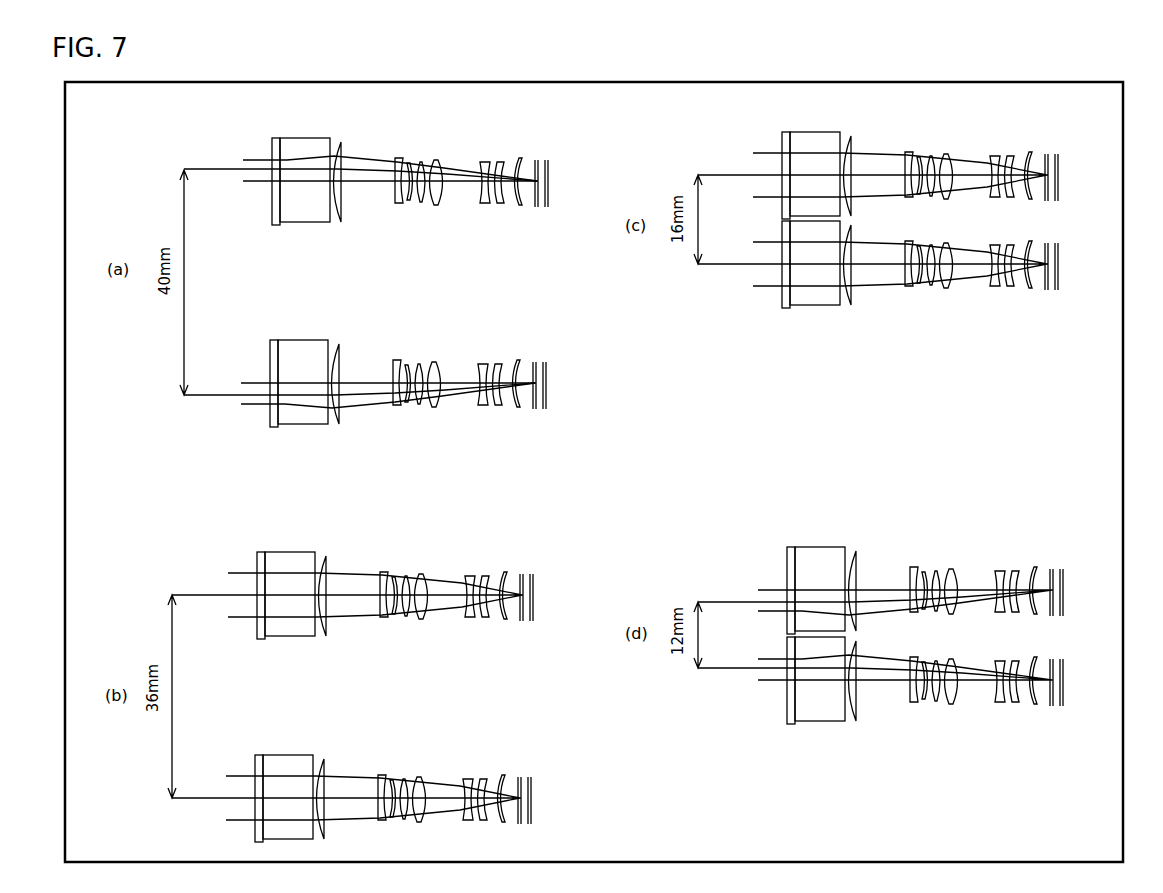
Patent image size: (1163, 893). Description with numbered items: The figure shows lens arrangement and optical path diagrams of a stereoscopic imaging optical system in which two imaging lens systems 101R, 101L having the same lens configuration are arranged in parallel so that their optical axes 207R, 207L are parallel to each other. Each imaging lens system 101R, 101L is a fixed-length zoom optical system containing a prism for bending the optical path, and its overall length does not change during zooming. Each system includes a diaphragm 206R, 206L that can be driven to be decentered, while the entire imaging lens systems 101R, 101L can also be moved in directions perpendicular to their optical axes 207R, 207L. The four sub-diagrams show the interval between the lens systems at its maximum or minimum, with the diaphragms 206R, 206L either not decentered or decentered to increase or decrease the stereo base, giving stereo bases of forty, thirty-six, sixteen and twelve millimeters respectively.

The imaging lens system 101R is at (287, 147).
The imaging lens system 101L is at (270, 413).
The diaphragm 206R is at (427, 162).
The diaphragm 206L is at (423, 405).
The optical axis 207R is at (373, 173).
The optical axis 207L is at (373, 390).